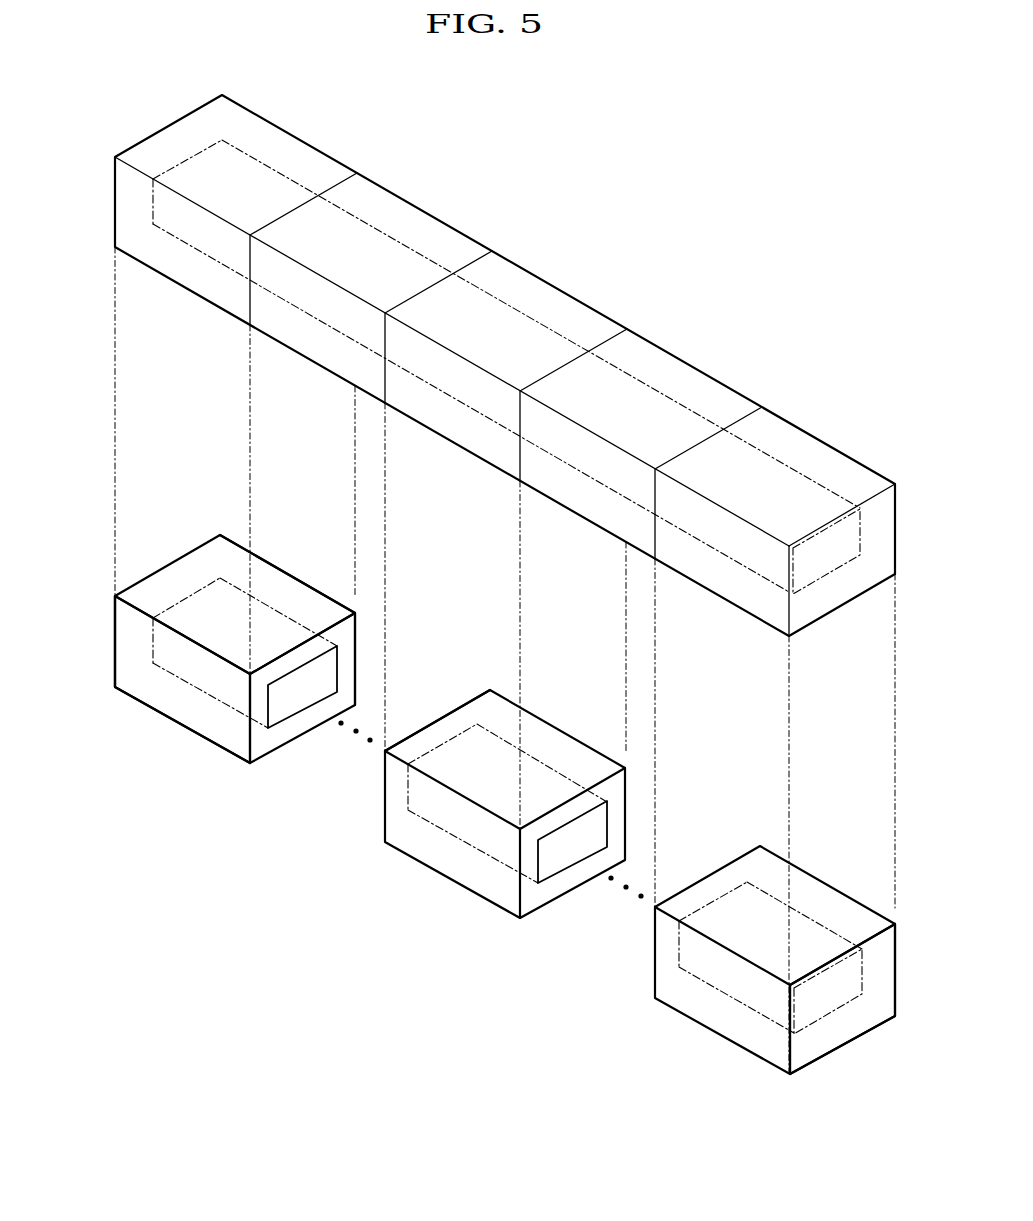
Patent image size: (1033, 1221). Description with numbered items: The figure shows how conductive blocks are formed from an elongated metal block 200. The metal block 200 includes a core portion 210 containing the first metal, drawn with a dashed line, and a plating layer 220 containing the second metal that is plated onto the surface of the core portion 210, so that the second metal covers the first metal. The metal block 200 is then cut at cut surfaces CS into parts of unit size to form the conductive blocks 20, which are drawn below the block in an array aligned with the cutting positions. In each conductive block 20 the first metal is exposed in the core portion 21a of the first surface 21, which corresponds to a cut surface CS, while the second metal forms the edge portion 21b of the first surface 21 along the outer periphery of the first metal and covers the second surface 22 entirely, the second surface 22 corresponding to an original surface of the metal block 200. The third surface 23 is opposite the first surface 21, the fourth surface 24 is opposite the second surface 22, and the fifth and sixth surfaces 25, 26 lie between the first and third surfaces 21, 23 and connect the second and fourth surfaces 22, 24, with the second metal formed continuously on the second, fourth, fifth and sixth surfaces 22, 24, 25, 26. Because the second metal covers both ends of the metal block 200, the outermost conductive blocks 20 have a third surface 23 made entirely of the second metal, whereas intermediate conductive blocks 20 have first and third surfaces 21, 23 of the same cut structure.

The metal block 200 is at (522, 365).
The core portion 210 is at (782, 460).
The plating layer 220 is at (858, 473).
The cut surface CS is at (743, 414).
The conductive block 20 is at (208, 676).
The first surface 21 is at (367, 801).
The core portion 21a is at (311, 697).
The edge portion 21b is at (262, 744).
The second surface 22 is at (148, 707).
The third surface 23 is at (115, 653).
The fourth surface 24 is at (190, 577).
The fifth surface 25 is at (185, 710).
The sixth surface 26 is at (290, 572).